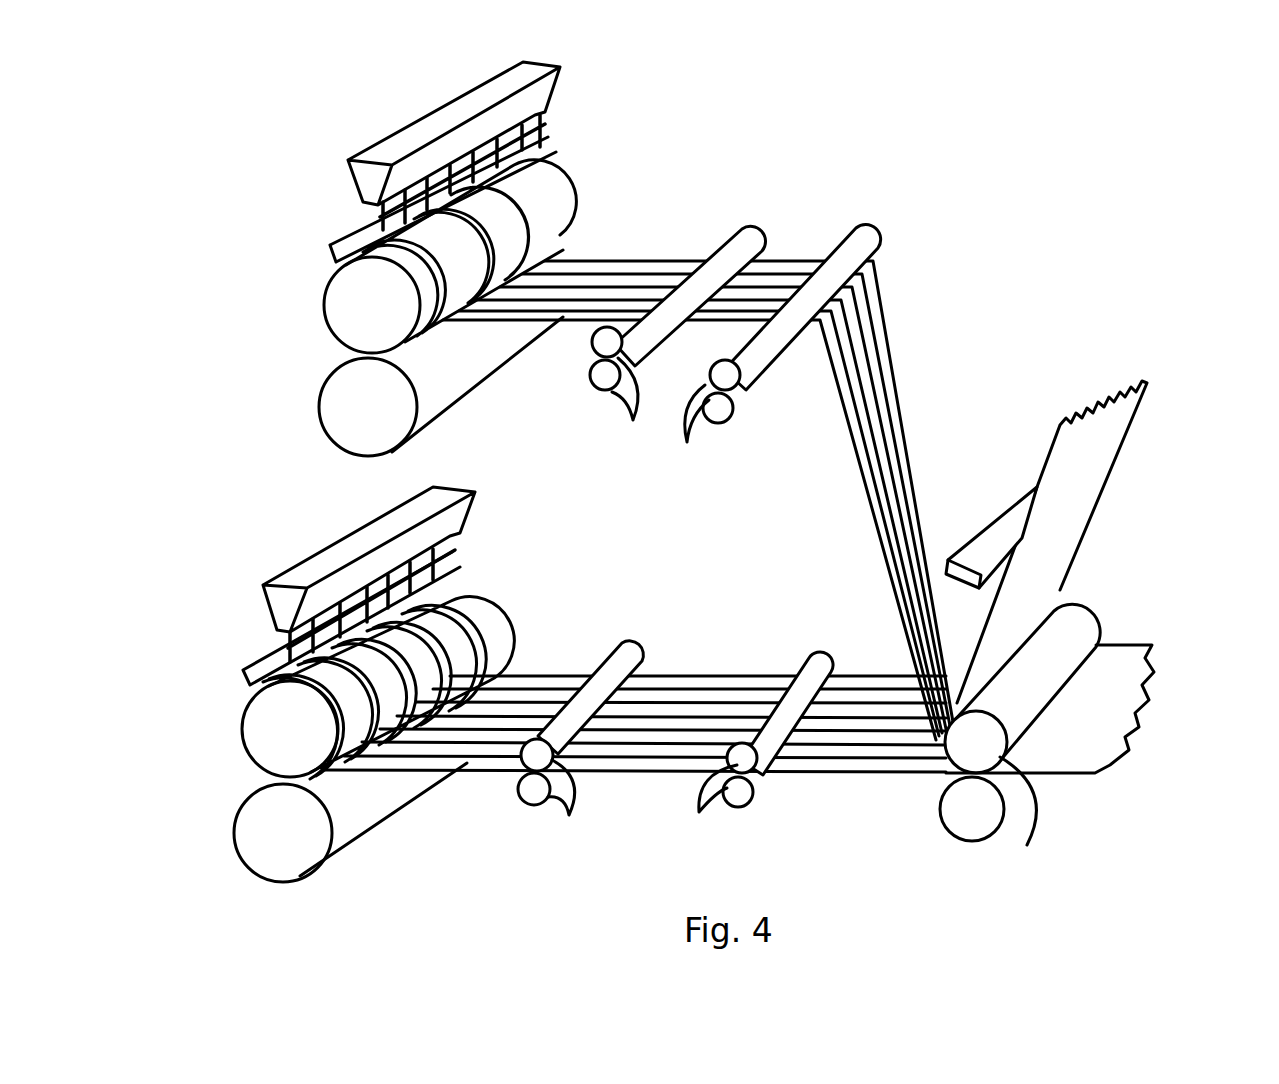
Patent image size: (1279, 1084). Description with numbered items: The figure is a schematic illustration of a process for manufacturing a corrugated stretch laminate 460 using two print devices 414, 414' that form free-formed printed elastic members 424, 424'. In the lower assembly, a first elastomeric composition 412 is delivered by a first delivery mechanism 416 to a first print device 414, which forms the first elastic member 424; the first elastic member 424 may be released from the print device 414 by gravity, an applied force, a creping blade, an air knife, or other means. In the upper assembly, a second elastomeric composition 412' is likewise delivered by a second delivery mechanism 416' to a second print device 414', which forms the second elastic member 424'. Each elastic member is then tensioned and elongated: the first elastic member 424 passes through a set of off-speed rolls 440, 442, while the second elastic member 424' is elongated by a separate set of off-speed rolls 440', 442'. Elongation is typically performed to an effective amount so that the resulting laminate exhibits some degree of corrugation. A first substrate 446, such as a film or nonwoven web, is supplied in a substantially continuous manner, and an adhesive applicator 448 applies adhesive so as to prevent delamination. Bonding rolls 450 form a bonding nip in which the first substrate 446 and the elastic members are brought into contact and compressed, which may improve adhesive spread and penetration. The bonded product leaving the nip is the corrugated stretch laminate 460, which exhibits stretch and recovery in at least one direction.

The second delivery mechanism 416' is at (396, 162).
The second elastomeric composition 412' is at (510, 171).
The second print device 414' is at (402, 308).
The second elastic member 424' is at (698, 500).
The off-speed roll 440' is at (678, 341).
The off-speed roll 442' is at (780, 354).
The first delivery mechanism 416 is at (332, 586).
The first elastomeric composition 412 is at (428, 598).
The first print device 414 is at (337, 739).
The first elastic member 424 is at (635, 772).
The off-speed roll 440 is at (580, 745).
The off-speed roll 442 is at (756, 750).
The first substrate 446 is at (1050, 454).
The adhesive applicator 448 is at (977, 533).
The bonding rolls 450 is at (1035, 802).
The corrugated stretch laminate 460 is at (1140, 648).